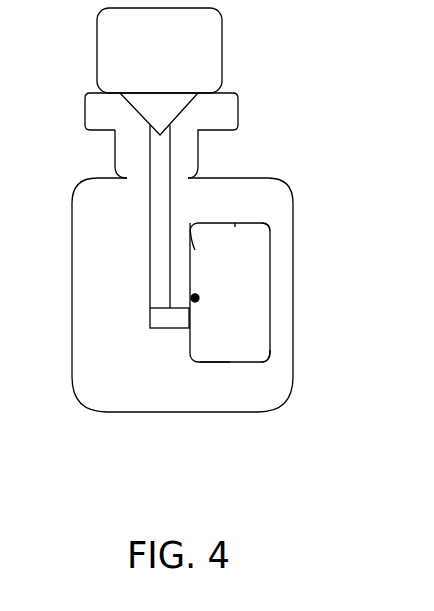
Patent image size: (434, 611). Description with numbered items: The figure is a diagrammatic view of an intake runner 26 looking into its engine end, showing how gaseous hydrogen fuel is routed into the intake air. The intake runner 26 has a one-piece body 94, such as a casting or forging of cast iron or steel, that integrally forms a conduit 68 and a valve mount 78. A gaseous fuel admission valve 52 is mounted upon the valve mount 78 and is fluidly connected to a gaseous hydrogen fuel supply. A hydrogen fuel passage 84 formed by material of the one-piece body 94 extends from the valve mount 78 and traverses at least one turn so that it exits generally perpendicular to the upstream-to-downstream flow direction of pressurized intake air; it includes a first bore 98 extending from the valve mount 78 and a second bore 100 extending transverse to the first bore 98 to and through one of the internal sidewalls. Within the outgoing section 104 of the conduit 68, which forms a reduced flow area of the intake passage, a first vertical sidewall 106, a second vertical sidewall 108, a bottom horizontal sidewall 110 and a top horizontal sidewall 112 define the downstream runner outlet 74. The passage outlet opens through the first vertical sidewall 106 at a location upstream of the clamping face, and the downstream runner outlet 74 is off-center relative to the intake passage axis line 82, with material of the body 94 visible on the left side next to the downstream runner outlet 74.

The intake runner 26 is at (68, 400).
The gaseous fuel admission valve 52 is at (212, 34).
The valve mount 78 is at (227, 112).
The hydrogen fuel passage 84 is at (150, 163).
The one-piece body 94 is at (80, 272).
The first bore 98 is at (150, 200).
The second bore 100 is at (182, 328).
The conduit 68 is at (287, 310).
The first vertical sidewall 106 is at (195, 228).
The intake passage axis line 82 is at (198, 293).
The downstream runner outlet 74 is at (242, 303).
The top horizontal sidewall 112 is at (243, 226).
The outgoing section 104 is at (264, 228).
The second vertical sidewall 108 is at (264, 330).
The bottom horizontal sidewall 110 is at (212, 360).